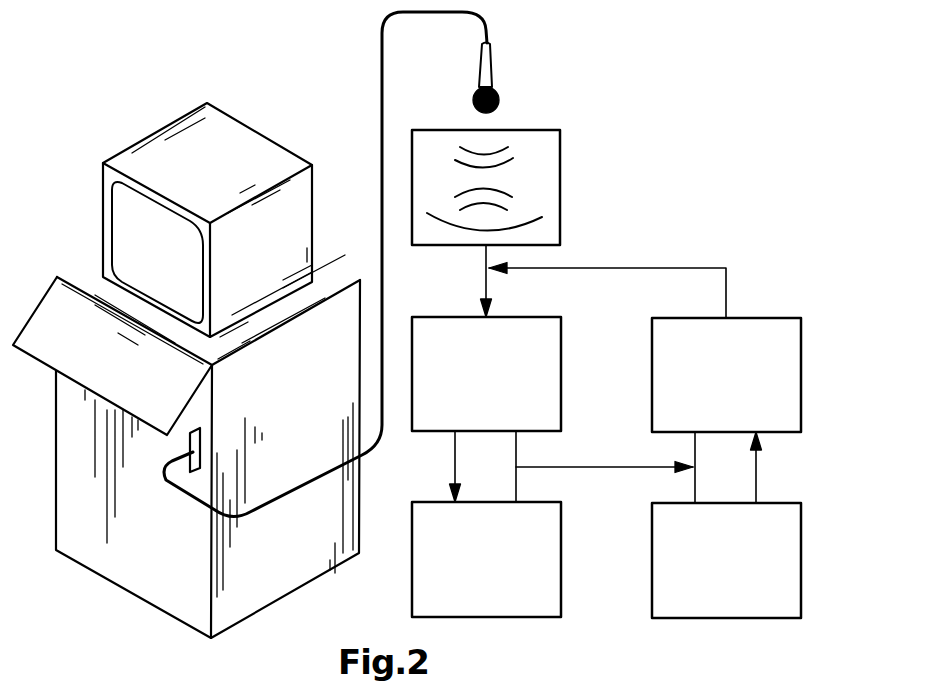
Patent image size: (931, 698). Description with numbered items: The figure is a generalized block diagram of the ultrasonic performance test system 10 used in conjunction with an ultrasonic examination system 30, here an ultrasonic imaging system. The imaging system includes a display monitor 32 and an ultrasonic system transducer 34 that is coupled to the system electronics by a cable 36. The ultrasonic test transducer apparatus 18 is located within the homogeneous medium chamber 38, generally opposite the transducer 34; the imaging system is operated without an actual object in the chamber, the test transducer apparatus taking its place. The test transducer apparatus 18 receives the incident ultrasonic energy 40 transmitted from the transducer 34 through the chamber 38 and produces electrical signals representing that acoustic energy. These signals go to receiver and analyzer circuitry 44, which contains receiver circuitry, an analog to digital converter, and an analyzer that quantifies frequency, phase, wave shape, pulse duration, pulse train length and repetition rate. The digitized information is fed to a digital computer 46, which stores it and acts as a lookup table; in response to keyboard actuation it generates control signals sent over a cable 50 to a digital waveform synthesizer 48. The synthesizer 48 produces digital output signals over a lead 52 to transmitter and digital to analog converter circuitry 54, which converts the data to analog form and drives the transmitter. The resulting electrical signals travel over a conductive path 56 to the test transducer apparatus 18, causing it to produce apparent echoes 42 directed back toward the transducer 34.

The ultrasonic performance test system 10 is at (612, 432).
The ultrasonic test transducer apparatus 18 is at (512, 225).
The ultrasonic examination system 30 is at (360, 500).
The display monitor 32 is at (152, 192).
The ultrasonic system transducer 34 is at (492, 68).
The cable 36 is at (378, 190).
The homogeneous medium chamber 38 is at (540, 128).
The incident ultrasonic energy 40 is at (498, 155).
The apparent echoes 42 is at (500, 193).
The receiver and analyzer circuitry 44 is at (561, 382).
The digital computer 46 is at (561, 602).
The digital waveform synthesizer 48 is at (801, 602).
The cable 50 is at (642, 470).
The lead 52 is at (756, 482).
The transmitter and digital to analog converter circuitry 54 is at (801, 392).
The conductive path 56 is at (677, 267).